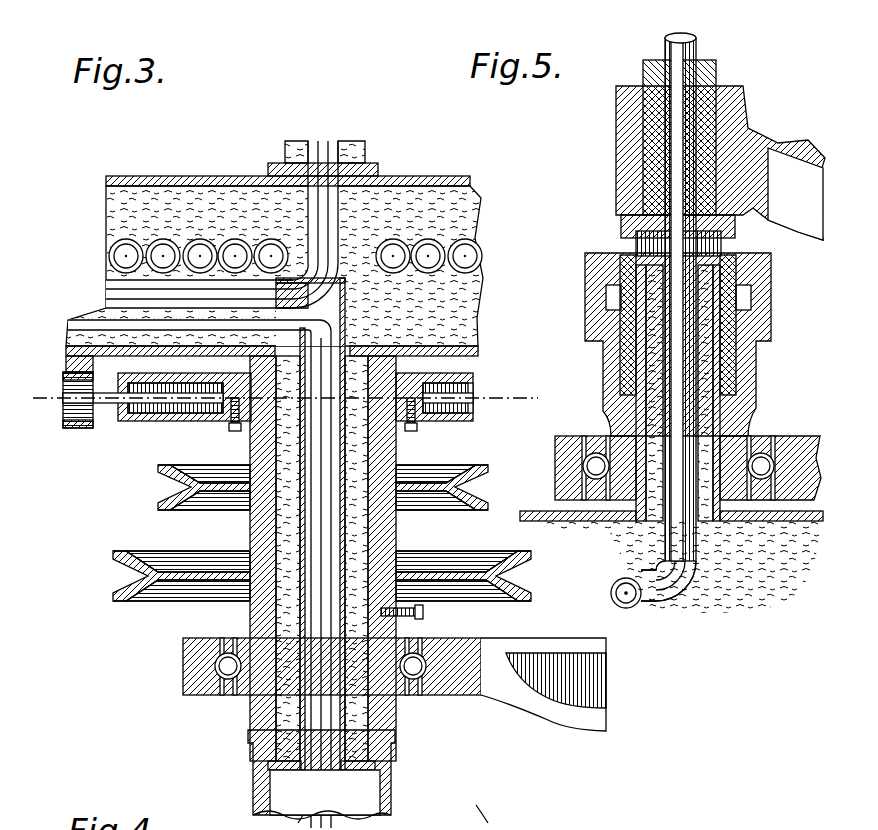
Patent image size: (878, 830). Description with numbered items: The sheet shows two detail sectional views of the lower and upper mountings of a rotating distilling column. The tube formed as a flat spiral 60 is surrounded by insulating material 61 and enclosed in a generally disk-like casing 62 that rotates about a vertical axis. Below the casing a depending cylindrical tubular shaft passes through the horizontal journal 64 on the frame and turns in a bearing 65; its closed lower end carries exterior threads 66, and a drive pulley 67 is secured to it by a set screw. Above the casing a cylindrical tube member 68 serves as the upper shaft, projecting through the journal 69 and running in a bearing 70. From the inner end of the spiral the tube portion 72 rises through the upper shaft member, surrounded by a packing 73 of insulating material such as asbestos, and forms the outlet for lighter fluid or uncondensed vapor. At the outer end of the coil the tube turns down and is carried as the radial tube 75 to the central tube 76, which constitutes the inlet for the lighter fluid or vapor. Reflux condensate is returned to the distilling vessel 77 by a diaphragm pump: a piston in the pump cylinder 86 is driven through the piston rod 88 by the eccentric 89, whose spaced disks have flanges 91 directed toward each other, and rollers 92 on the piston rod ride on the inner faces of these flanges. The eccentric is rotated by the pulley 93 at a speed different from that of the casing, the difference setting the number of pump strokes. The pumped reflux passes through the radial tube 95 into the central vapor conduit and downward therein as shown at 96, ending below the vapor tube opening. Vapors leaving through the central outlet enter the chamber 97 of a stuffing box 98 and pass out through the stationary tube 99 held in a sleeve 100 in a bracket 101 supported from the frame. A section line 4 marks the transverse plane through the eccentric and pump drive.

In FIG. 3, the section line 4- 4 is at (284, 395).
In FIG. 3, the flat spiral 60 is at (104, 244).
In FIG. 5, the flat spiral 60 is at (594, 593).
In FIG. 3, the insulating material 61 is at (455, 198).
In FIG. 3, the disk-like casing 62 is at (420, 168).
In FIG. 5, the disk-like casing 62 is at (540, 505).
In FIG. 3, the horizontal journal 64 is at (488, 680).
In FIG. 3, the bearing 65 is at (240, 680).
In FIG. 3, the exterior threads 66 is at (380, 752).
In FIG. 3, the drive pulley 67 is at (130, 566).
In FIG. 3, the cylindrical tube member 68 is at (352, 140).
In FIG. 5, the cylindrical tube member 68 is at (725, 360).
In FIG. 5, the journal 69 is at (775, 435).
In FIG. 5, the bearing 70 is at (555, 448).
In FIG. 3, the tube portion 72 is at (300, 152).
In FIG. 5, the tube portion 72 is at (665, 548).
In FIG. 5, the insulating packing 73 is at (698, 318).
In FIG. 3, the radial tube 75 is at (110, 272).
In FIG. 3, the central tube 76 is at (325, 300).
In FIG. 5, the central tube 76 is at (678, 393).
In FIG. 3, the distilling vessel 77 is at (248, 772).
In FIG. 3, the pump cylinder 86 is at (65, 422).
In FIG. 3, the piston rod 88 is at (100, 395).
In FIG. 3, the eccentric 89 is at (165, 405).
In FIG. 3, the flanges 91 is at (499, 397).
In FIG. 3, the rollers 92 is at (115, 413).
In FIG. 3, the pulley 93 is at (160, 490).
In FIG. 3, the radial tube 95 is at (105, 315).
In FIG. 3, the reflux return tube 96 is at (365, 442).
In FIG. 5, the chamber 97 is at (632, 232).
In FIG. 5, the stuffing box 98 is at (598, 288).
In FIG. 5, the stationary tube 99 is at (680, 42).
In FIG. 5, the sleeve 100 is at (708, 70).
In FIG. 5, the bracket 101 is at (730, 125).